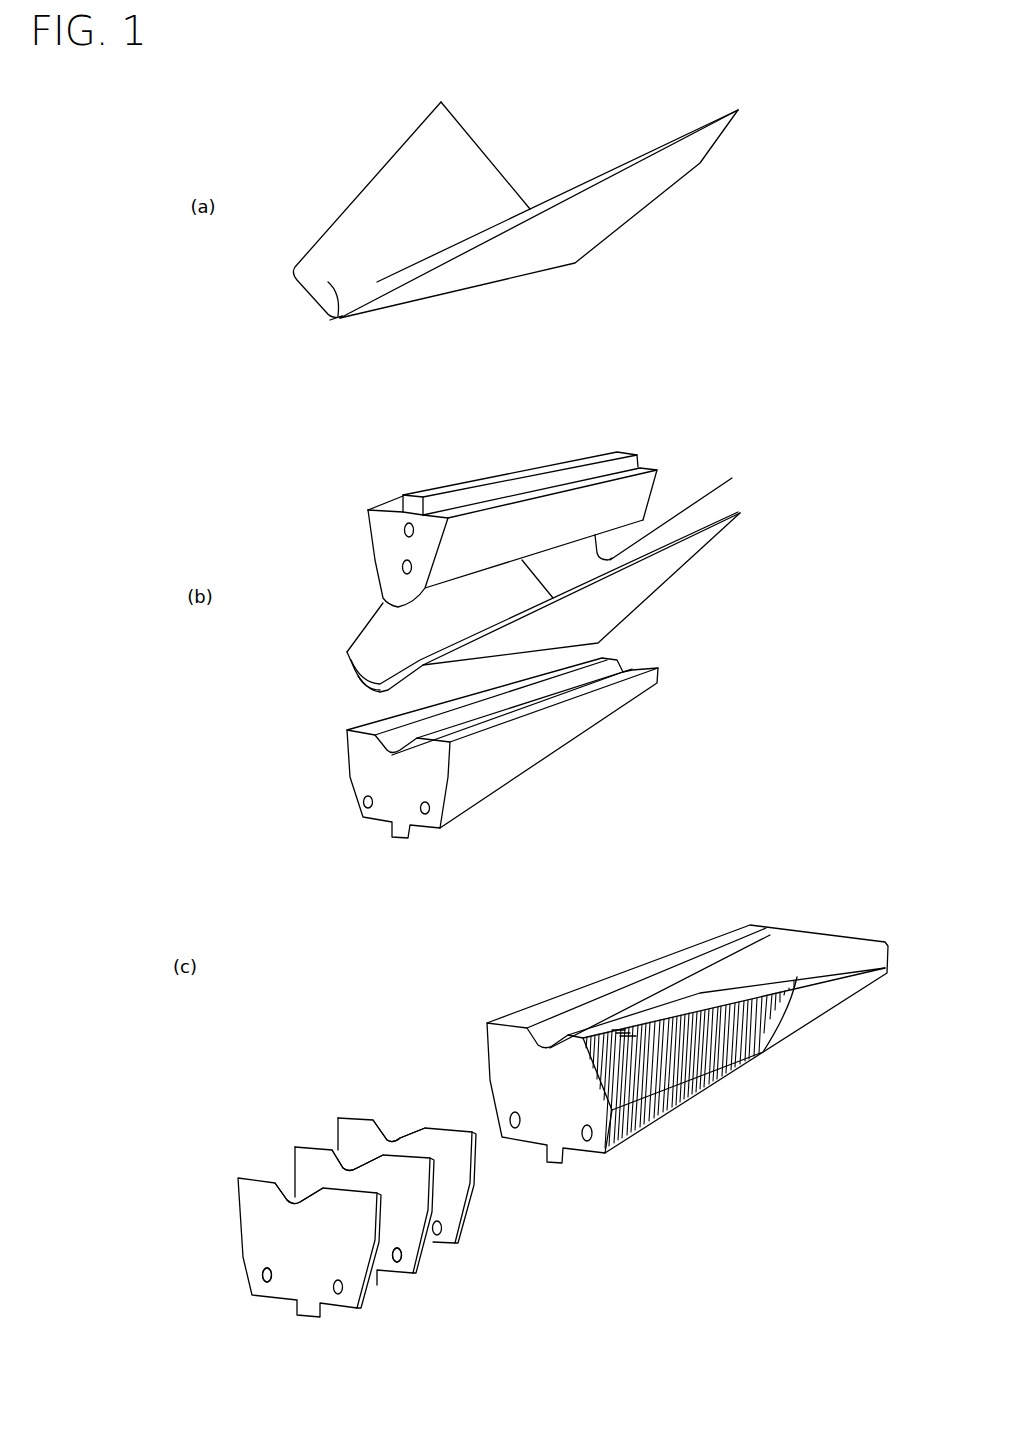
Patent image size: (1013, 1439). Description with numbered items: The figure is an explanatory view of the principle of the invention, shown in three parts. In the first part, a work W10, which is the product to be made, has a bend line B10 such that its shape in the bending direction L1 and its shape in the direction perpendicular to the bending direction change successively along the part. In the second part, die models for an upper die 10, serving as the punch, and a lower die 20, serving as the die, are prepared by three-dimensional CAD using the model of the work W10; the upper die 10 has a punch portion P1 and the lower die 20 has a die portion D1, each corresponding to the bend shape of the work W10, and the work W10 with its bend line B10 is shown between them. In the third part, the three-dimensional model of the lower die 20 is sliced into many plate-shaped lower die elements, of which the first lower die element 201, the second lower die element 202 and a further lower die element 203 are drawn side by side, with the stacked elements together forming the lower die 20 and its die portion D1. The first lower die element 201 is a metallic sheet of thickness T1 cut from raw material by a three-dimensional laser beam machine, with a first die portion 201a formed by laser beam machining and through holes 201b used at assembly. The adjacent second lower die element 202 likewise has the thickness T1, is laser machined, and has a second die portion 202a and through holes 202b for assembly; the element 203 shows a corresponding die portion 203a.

The work W10 is at (620, 202).
The bend line B10 is at (330, 283).
The bending direction L1 is at (342, 338).
The upper die 10 is at (395, 542).
The punch portion P1 is at (683, 505).
The lower die 20 is at (580, 900).
The die portion D1 is at (640, 657).
The first lower die element 201 is at (268, 1227).
The first die portion 201a is at (283, 1192).
The through holes 201b is at (260, 1270).
The second lower die element 202 is at (354, 1185).
The second die portion 202a is at (350, 1157).
The through holes 202b is at (407, 1259).
The lower die element 203 is at (408, 1147).
The notch of third die plate 203a is at (390, 1127).
The thickness T1 is at (333, 1325).